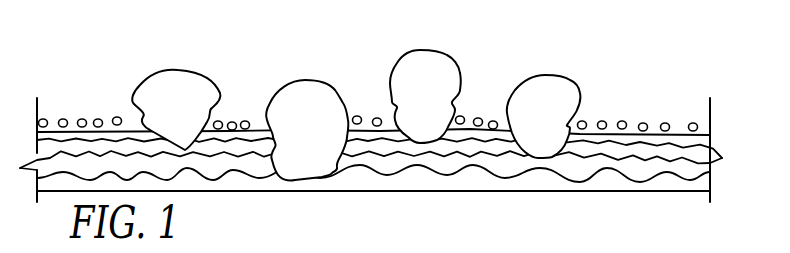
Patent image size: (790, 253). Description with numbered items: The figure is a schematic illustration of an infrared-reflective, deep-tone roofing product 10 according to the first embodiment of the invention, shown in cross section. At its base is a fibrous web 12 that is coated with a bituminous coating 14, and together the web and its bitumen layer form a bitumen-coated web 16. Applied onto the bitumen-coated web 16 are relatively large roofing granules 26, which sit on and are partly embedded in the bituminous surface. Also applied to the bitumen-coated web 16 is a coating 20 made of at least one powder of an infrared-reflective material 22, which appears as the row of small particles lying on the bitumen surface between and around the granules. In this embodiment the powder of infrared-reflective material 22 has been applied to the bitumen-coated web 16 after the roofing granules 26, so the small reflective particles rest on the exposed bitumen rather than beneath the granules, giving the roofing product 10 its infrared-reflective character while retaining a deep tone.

The infrared-reflective roofing product 10 is at (645, 37).
The fibrous web 12 is at (698, 166).
The bituminous coating 14 is at (504, 181).
The bitumen-coated web 16 is at (618, 192).
The coating of infrared-reflective powder 20 is at (367, 118).
The infrared-reflective material 22 is at (482, 118).
The roofing granules 26 is at (186, 108).